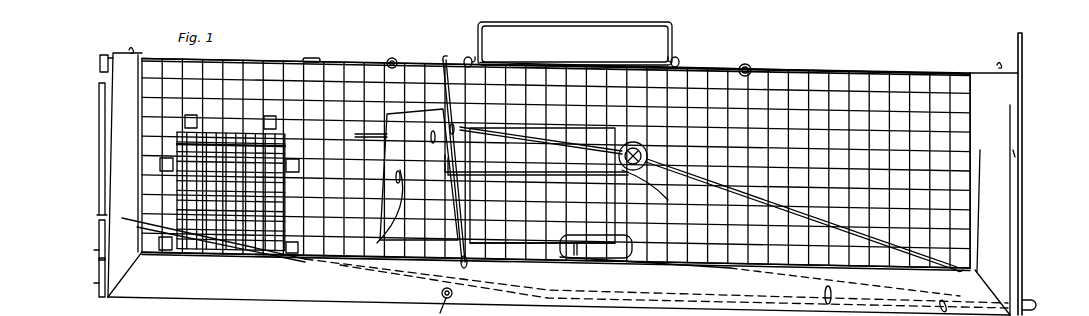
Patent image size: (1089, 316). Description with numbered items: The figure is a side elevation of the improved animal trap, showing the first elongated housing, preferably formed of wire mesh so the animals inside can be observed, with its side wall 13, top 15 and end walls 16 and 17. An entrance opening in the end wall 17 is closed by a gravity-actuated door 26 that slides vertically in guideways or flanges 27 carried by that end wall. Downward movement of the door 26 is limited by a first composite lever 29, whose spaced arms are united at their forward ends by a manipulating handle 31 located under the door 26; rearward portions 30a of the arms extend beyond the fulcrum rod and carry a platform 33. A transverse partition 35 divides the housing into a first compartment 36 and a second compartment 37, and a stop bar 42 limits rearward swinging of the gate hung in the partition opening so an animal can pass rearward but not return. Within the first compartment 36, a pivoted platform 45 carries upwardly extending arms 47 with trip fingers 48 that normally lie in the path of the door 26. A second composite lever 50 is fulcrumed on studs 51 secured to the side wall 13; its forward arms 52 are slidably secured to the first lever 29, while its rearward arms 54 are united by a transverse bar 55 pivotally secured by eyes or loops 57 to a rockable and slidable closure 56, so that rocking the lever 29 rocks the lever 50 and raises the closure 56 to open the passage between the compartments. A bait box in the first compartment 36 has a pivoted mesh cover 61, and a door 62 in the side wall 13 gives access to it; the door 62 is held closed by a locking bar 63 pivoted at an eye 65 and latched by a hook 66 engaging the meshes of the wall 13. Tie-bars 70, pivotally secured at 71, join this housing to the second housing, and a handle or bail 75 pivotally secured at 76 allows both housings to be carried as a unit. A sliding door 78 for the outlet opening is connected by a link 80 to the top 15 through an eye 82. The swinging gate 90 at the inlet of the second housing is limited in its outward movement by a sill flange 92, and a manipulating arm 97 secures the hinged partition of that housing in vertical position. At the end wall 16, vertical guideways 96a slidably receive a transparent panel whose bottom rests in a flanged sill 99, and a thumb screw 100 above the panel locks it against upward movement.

The side wall 13 is at (838, 75).
The top 15 is at (781, 68).
The end wall 16 is at (97, 207).
The end wall 17 is at (1028, 250).
The gravity-actuated closure or door 26 is at (1023, 52).
The guideways or flanges 27 is at (1019, 200).
The first composite lever 29 is at (1031, 295).
The portions of the arms 30a is at (377, 263).
The manipulating handle or member 31 is at (1034, 305).
The platform 33 is at (305, 247).
The partition 35 is at (444, 88).
The first compartment 36 is at (923, 128).
The second compartment 37 is at (210, 89).
The stop bar 42 is at (381, 213).
The platform 45 is at (650, 260).
The arms 47 is at (982, 228).
The trip fingers 48 is at (1018, 153).
The second composite lever 50 is at (548, 128).
The bolts or studs 51 is at (652, 152).
The spaced parallel arms 52 is at (780, 203).
The spaced parallel arms 54 is at (585, 142).
The transversely-extending bar 55 is at (454, 126).
The rockable and slidable closure 56 is at (370, 133).
The eyes or loops 57 is at (508, 127).
The cover 61 is at (618, 248).
The door 62 is at (497, 208).
The locking bar 63 is at (540, 178).
The eye 65 is at (434, 144).
The hook or latch 66 is at (650, 195).
The links or tie-bars 70 is at (131, 51).
The pivotal connection of tie-bar 71 is at (466, 58).
The handle or bail 75 is at (634, 27).
The pivotal connection of handle 76 is at (677, 62).
The door or closure 78 is at (306, 60).
The link 80 is at (336, 58).
The eye 82 is at (395, 57).
The gate 90 is at (212, 175).
The sill flange 92 is at (178, 120).
The vertical guideway 96a is at (100, 95).
The manipulating arm 97 is at (738, 64).
The flanged sill 99 is at (99, 289).
The thumb screws or bolts 100 is at (100, 65).